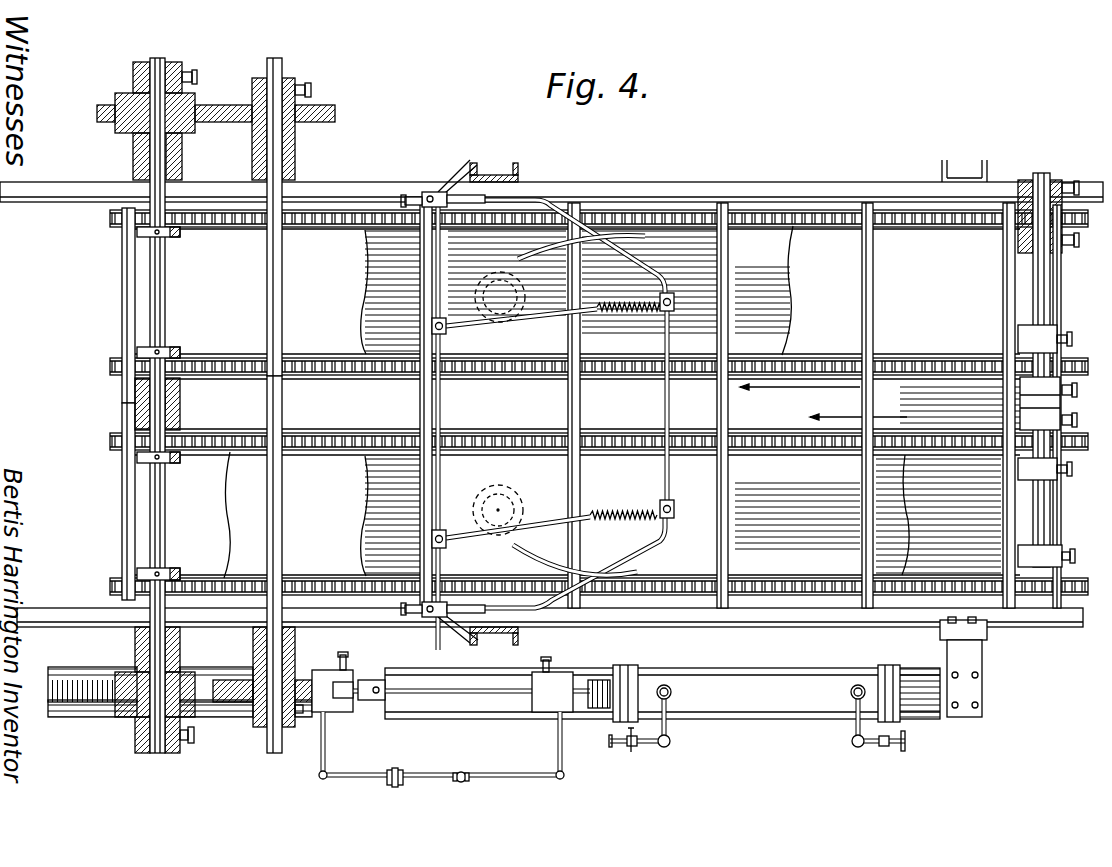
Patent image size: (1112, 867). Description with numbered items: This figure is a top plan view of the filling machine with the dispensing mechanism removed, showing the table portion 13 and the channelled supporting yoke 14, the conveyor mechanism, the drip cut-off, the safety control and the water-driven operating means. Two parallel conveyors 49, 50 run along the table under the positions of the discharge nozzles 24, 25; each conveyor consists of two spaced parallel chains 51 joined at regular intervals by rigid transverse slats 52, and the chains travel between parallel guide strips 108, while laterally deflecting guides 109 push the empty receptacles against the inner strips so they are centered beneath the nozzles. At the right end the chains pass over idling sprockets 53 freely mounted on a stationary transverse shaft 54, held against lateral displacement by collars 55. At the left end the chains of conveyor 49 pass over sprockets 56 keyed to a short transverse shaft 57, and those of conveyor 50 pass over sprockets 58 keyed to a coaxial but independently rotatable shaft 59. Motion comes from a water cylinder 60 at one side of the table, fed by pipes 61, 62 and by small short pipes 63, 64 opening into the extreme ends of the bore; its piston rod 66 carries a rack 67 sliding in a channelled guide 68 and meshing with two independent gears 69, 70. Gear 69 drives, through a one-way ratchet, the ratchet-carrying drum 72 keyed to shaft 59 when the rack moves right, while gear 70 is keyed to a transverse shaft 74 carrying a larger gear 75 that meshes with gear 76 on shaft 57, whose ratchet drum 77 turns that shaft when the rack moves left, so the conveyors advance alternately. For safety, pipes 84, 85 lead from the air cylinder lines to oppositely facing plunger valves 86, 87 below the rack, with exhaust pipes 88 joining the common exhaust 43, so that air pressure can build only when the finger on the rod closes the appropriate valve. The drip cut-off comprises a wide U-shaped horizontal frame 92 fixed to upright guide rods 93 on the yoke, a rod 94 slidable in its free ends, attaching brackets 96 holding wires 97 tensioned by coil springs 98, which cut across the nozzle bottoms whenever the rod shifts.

The table portion 13 is at (340, 182).
The channelled supporting yoke 14 is at (277, 78).
The discharge nozzle 24 is at (508, 300).
The discharge nozzle 25 is at (500, 500).
The exhaust 43 is at (463, 776).
The conveyor 49 is at (122, 260).
The conveyor 50 is at (122, 468).
The chains 51 is at (790, 300).
The transverse slats 52 is at (268, 298).
The idling sprockets 53 is at (1064, 232).
The stationary transverse shaft 54 is at (1050, 298).
The collars 55 is at (1055, 255).
The sprockets 56 is at (180, 236).
The short transverse shaft 57 is at (160, 68).
The sprockets 58 is at (170, 464).
The short transverse shaft 59 is at (166, 512).
The water cylinder 60 is at (770, 705).
The pipe 61 is at (668, 686).
The pipe 62 is at (856, 686).
The short pipe 63 is at (670, 742).
The short pipe 64 is at (855, 742).
The piston rod 66 is at (402, 697).
The rack 67 is at (92, 680).
The channelled guide 68 is at (62, 717).
The gear 69 is at (120, 692).
The gear 70 is at (250, 695).
The ratchet-carrying drum 72 is at (190, 748).
The transverse shaft 74 is at (267, 400).
The gear 75 is at (320, 107).
The gear 76 is at (113, 108).
The ratchet carrying drum 77 is at (133, 70).
The pipe 84 is at (553, 672).
The pipe 85 is at (345, 672).
The plunger valve 86 is at (600, 682).
The plunger valve 87 is at (372, 680).
The exhaust pipes 88 is at (326, 748).
The U shaped horizontal frame 92 is at (668, 290).
The upright guide rods 93 is at (447, 190).
The rod 94 is at (436, 262).
The attaching brackets 96 is at (672, 312).
The wires 97 is at (560, 318).
The coil springs 98 is at (630, 312).
The guide strips 108 is at (917, 207).
The laterally deflecting guides 109 is at (600, 252).